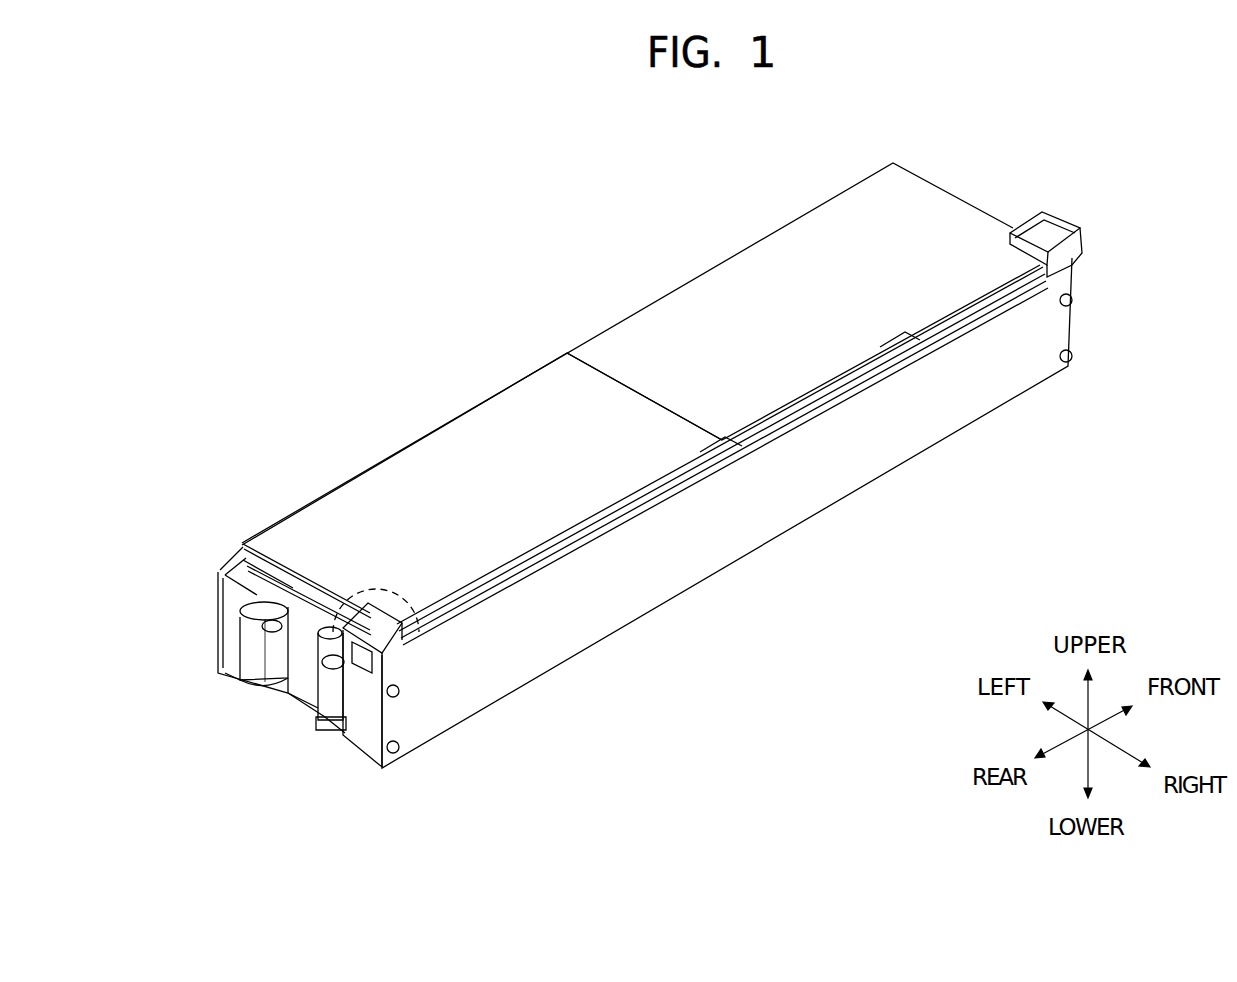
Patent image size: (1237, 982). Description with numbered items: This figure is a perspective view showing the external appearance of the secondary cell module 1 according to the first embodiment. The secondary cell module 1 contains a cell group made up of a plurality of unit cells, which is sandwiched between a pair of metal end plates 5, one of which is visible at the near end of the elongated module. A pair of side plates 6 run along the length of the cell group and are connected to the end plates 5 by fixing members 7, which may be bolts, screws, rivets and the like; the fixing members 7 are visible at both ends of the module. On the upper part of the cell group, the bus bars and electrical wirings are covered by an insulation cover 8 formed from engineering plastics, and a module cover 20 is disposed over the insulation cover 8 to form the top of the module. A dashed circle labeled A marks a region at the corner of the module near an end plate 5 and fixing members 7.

The secondary cell module 1 is at (491, 320).
The module cover 20 is at (540, 417).
The end plate 5 is at (225, 667).
The side plate 6 is at (229, 560).
The fixing member 7 is at (373, 740).
The insulation cover 8 is at (817, 403).
The enlarged area A is at (416, 652).